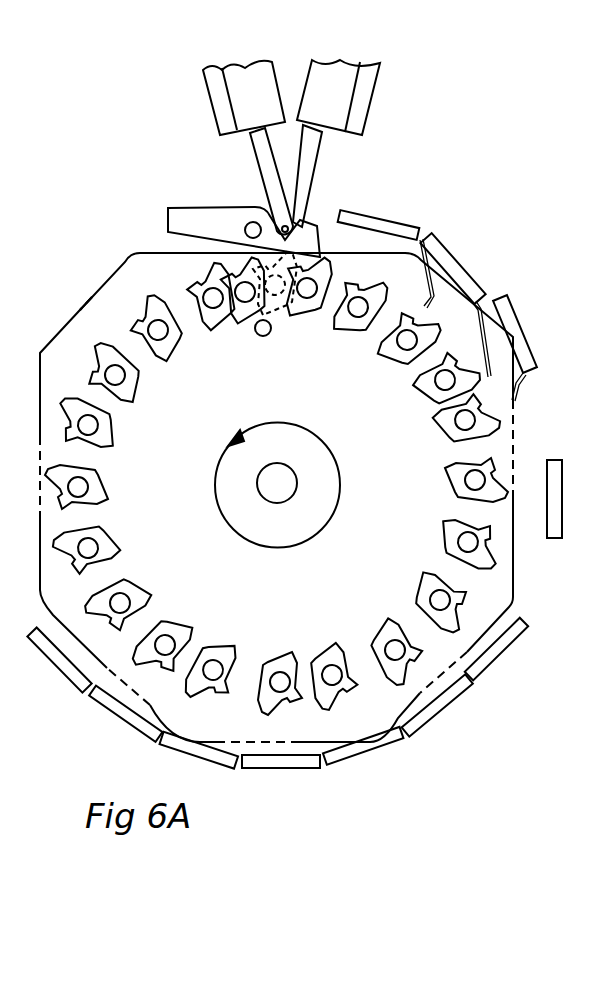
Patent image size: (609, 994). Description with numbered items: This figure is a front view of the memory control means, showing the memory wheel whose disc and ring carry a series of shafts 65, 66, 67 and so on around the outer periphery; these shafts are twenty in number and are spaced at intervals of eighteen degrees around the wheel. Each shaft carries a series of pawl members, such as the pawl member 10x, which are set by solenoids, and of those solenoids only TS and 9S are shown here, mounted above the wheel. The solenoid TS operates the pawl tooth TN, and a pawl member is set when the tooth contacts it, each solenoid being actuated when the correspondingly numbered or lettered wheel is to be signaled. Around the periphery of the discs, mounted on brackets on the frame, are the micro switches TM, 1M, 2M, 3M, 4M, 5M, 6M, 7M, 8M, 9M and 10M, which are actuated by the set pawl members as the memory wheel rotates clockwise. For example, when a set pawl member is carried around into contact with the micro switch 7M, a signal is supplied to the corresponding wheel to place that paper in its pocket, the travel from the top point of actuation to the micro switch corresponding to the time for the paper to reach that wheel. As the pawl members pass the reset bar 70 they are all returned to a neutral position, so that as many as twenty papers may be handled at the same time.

The shaft 65 is at (293, 297).
The shaft 66 is at (337, 326).
The shaft 67 is at (417, 388).
The reset bar 70 is at (264, 338).
The pawl member 10x is at (383, 346).
The solenoid TS is at (278, 103).
The solenoid 9S is at (355, 90).
The pawl tooth TN is at (302, 226).
The micro switch 1M is at (396, 222).
The micro switch 2M is at (536, 360).
The micro switch 3M is at (563, 526).
The micro switch 4M is at (498, 663).
The micro switch 5M is at (353, 755).
The micro switch 6M is at (208, 763).
The micro switch 7M is at (444, 712).
The micro switch 8M is at (252, 769).
The micro switch 9M is at (138, 726).
The micro switch 10M is at (66, 677).
The micro switch TM is at (456, 266).